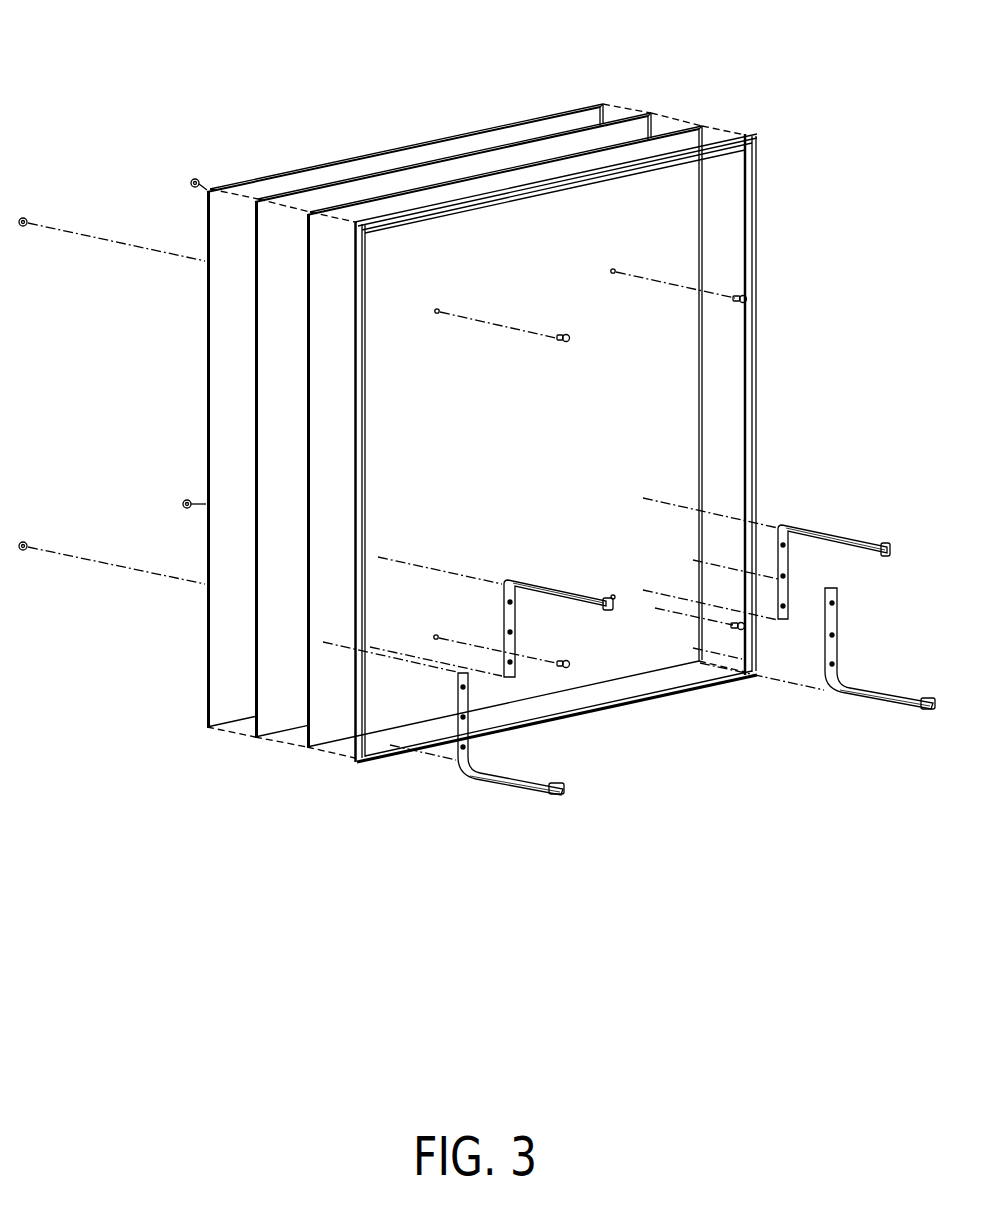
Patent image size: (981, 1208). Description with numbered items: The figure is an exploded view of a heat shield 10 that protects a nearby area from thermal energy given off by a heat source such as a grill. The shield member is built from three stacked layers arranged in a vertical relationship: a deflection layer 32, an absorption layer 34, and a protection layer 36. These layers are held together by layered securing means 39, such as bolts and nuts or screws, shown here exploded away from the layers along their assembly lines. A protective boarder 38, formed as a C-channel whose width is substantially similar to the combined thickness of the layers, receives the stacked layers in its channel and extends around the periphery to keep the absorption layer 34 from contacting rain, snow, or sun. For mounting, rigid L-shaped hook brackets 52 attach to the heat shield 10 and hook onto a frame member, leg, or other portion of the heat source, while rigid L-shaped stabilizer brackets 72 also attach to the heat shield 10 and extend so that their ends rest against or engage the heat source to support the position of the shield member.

The heat shield 10 is at (348, 100).
The deflection layer 32 is at (682, 142).
The absorption layer 34 is at (638, 127).
The protection layer 36 is at (578, 108).
The protective boarder 38 is at (755, 167).
The layered securing means 39 is at (753, 297).
The hook bracket 52 is at (857, 543).
The stabilizer bracket 72 is at (535, 781).